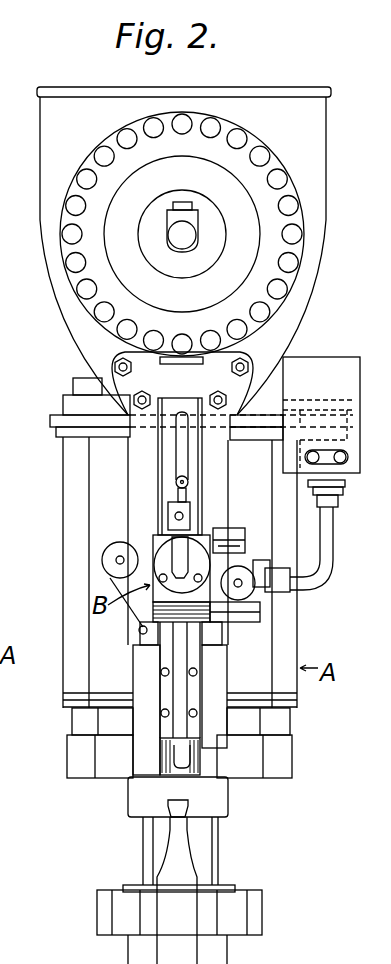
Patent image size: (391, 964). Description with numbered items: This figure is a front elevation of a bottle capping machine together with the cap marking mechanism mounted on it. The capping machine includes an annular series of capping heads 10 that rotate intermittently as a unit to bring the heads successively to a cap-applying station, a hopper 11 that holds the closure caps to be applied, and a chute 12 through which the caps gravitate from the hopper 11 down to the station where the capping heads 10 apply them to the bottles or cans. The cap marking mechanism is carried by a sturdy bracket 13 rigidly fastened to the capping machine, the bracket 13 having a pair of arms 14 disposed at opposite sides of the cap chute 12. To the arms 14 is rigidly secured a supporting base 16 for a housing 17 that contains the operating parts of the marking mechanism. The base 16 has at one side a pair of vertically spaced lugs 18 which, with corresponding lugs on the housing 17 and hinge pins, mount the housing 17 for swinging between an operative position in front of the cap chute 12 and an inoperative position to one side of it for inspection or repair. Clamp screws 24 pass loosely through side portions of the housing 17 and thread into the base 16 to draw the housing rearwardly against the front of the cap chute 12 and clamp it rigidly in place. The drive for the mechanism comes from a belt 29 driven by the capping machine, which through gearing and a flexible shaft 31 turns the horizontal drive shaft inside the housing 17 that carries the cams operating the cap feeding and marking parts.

The capping heads 10 is at (248, 775).
The hopper 11 is at (308, 123).
The chute 12 is at (160, 680).
The bracket 13 is at (182, 383).
The arms 14 is at (140, 483).
The supporting base 16 is at (140, 640).
The housing 17 is at (215, 532).
The lugs 18 is at (220, 645).
The clamp screws 24 is at (104, 558).
The belt 29 is at (62, 422).
The flexible shaft 31 is at (323, 553).